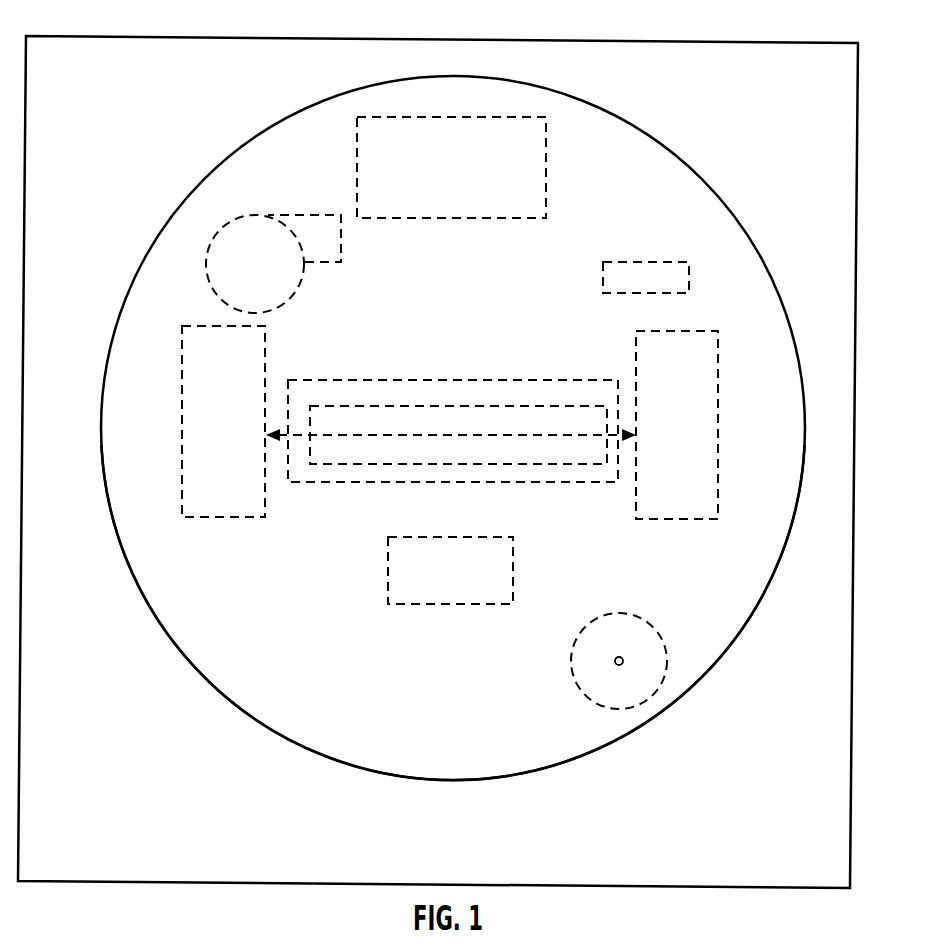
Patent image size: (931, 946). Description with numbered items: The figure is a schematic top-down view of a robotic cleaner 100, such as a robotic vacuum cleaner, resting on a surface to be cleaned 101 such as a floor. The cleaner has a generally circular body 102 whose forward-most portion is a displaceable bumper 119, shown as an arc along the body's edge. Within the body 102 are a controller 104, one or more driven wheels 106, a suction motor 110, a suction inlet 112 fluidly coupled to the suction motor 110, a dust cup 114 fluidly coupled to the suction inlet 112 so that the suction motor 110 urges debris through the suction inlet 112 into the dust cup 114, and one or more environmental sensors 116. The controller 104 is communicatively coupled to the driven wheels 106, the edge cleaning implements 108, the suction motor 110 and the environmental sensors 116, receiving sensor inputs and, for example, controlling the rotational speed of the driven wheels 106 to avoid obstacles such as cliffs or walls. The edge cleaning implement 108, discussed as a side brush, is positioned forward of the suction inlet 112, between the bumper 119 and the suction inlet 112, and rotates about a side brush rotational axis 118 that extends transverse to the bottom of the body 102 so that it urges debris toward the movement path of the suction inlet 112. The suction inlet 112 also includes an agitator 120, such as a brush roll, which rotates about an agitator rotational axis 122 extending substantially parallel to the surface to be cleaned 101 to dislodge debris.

The robotic cleaner 100 is at (126, 113).
The surface to be cleaned 101 is at (745, 42).
The body 102 is at (158, 235).
The controller 104 is at (388, 557).
The driven wheels 106 is at (182, 380).
The edge cleaning implement 108 is at (572, 677).
The suction motor 110 is at (332, 262).
The suction inlet 112 is at (432, 380).
The dust cup 114 is at (546, 187).
The environmental sensors 116 is at (620, 262).
The side brush rotational axis 118 is at (623, 658).
The displaceable bumper 119 is at (648, 753).
The agitator 120 is at (513, 406).
The agitator rotational axis 122 is at (351, 435).